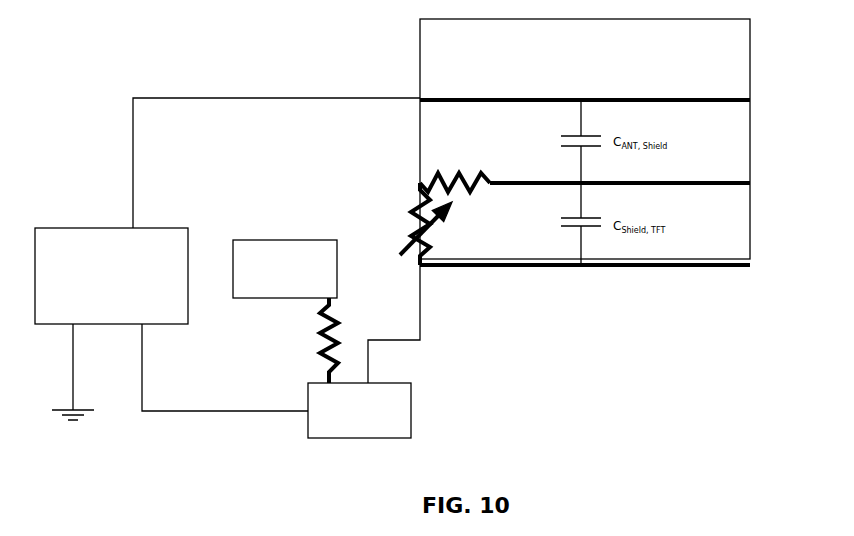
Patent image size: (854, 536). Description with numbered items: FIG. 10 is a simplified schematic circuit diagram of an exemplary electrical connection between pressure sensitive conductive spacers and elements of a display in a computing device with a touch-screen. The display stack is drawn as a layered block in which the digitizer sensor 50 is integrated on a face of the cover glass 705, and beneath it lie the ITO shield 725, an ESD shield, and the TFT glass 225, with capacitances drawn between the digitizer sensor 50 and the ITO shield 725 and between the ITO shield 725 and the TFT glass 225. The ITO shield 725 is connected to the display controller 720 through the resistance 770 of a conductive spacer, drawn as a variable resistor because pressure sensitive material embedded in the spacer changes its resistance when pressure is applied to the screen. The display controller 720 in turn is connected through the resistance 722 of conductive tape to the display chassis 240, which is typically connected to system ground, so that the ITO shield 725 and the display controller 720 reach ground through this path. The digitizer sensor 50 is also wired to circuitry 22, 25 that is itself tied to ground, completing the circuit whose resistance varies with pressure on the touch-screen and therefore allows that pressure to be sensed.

The cover glass 705 is at (750, 60).
The digitizer sensor 50 is at (718, 102).
The ITO shield 725 is at (732, 186).
The TFT glass 225 is at (737, 229).
The resistance of conductive spacer 770 is at (410, 228).
The transceiver circuitry 22 is at (111, 256).
The control circuitry 25 is at (128, 228).
The display chassis 240 is at (253, 240).
The resistance of conductive tape 722 is at (331, 310).
The display controller 720 is at (412, 409).